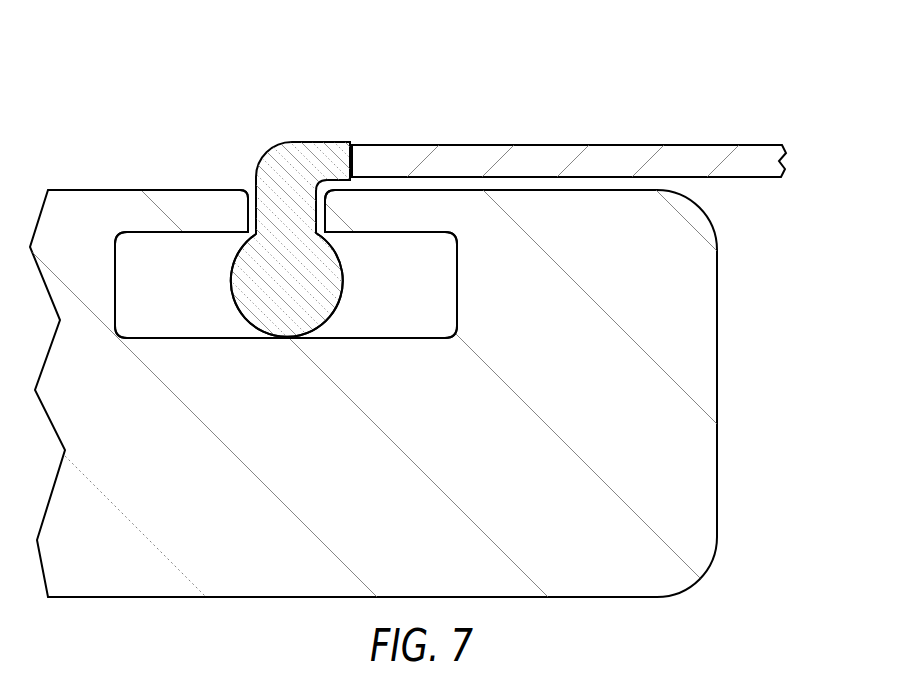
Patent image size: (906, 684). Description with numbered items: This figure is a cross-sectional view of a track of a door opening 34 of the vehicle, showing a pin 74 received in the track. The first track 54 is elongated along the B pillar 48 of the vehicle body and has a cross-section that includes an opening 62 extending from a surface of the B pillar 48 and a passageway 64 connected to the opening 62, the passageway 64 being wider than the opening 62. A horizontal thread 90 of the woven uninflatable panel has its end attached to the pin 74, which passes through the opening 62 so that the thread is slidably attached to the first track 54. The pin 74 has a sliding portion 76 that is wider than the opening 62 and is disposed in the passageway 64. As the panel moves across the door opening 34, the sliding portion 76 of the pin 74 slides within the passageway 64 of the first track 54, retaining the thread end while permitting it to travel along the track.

The door opening 34 is at (718, 345).
The B pillar 48 is at (193, 188).
The first track 54 is at (243, 340).
The opening 62 is at (325, 218).
The passageway 64 is at (457, 262).
The pin 74 is at (283, 152).
The sliding portion 76 is at (343, 280).
The horizontal thread 90 is at (548, 145).